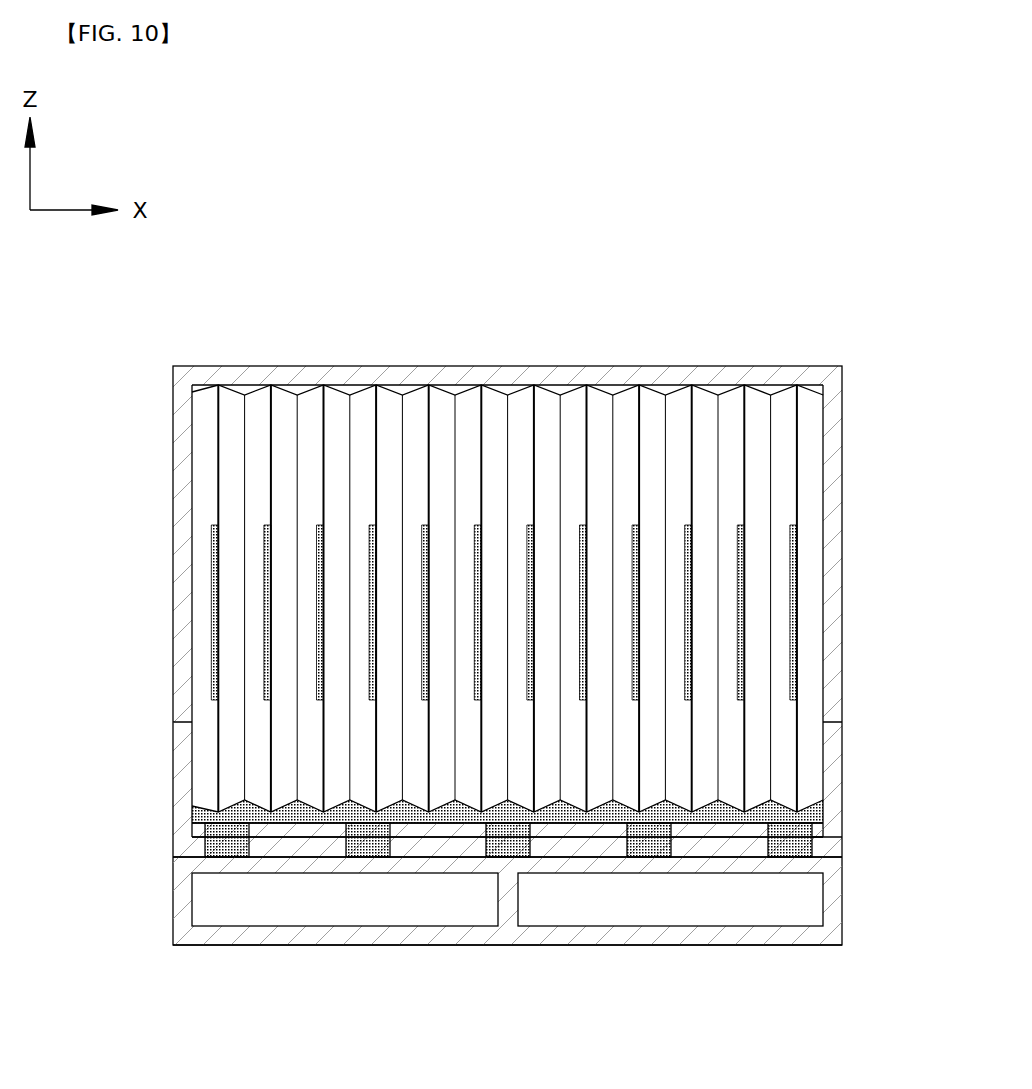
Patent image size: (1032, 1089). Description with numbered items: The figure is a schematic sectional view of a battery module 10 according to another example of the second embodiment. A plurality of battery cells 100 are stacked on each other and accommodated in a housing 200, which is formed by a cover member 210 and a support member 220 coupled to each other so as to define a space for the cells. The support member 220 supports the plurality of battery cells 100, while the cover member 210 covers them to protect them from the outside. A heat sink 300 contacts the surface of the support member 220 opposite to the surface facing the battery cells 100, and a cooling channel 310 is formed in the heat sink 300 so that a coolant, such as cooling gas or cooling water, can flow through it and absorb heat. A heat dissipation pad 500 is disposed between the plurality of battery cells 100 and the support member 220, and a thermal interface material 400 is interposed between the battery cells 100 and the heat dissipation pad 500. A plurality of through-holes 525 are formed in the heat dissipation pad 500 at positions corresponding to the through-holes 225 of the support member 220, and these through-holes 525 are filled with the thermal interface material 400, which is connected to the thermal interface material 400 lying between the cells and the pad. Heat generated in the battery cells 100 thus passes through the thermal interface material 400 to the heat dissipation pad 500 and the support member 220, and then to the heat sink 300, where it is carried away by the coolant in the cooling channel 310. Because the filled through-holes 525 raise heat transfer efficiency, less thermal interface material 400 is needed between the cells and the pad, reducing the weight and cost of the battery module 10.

The battery module 10 is at (222, 293).
The battery cells 100 is at (580, 457).
The housing 200 is at (429, 655).
The cover member 210 is at (183, 695).
The support member 220 is at (183, 750).
The through-holes 225 is at (487, 843).
The heat sink 300 is at (465, 922).
The cooling channel 310 is at (327, 908).
The thermal interface material 400 is at (243, 815).
The heat dissipation pad 500 is at (723, 832).
The through-holes 525 is at (628, 830).